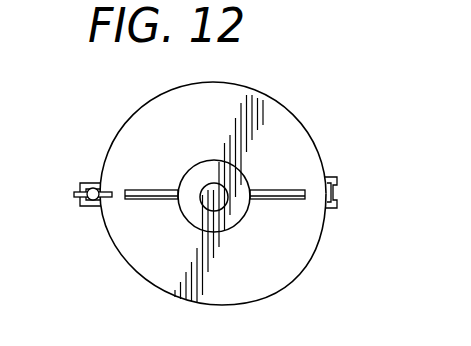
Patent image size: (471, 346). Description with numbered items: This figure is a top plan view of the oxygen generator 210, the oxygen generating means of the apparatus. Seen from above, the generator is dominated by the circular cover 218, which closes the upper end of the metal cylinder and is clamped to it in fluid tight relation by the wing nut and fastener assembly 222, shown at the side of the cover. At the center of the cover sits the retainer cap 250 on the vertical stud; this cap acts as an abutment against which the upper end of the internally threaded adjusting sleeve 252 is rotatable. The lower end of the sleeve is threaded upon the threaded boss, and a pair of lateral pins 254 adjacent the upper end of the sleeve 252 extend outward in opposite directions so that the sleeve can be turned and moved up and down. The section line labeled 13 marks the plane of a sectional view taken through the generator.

The section line 13- 13 is at (72, 195).
The oxygen generator 210 is at (296, 115).
The cover 218 is at (250, 288).
The wing nut and fastener assembly 222 is at (90, 208).
The retainer cap 250 is at (208, 212).
The adjusting sleeve 252 is at (238, 209).
The lateral pins 254 is at (152, 190).